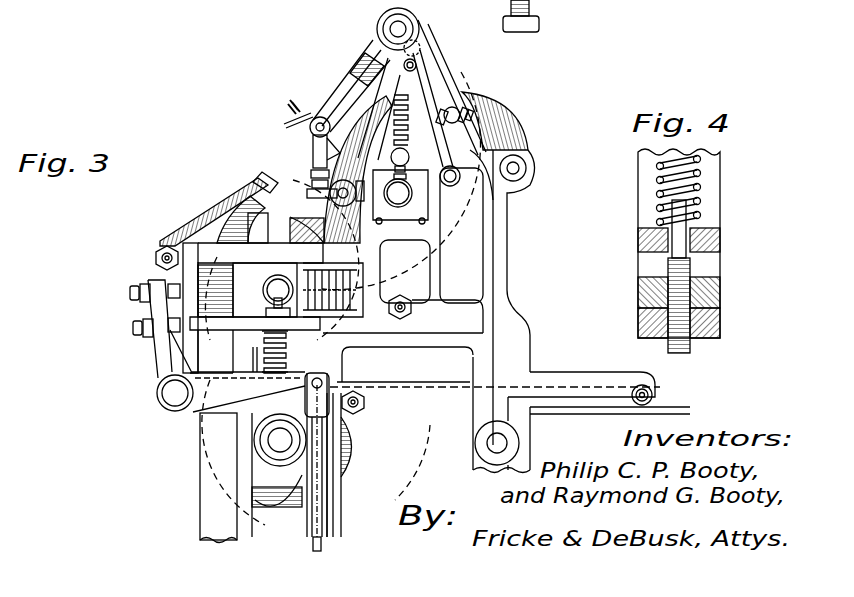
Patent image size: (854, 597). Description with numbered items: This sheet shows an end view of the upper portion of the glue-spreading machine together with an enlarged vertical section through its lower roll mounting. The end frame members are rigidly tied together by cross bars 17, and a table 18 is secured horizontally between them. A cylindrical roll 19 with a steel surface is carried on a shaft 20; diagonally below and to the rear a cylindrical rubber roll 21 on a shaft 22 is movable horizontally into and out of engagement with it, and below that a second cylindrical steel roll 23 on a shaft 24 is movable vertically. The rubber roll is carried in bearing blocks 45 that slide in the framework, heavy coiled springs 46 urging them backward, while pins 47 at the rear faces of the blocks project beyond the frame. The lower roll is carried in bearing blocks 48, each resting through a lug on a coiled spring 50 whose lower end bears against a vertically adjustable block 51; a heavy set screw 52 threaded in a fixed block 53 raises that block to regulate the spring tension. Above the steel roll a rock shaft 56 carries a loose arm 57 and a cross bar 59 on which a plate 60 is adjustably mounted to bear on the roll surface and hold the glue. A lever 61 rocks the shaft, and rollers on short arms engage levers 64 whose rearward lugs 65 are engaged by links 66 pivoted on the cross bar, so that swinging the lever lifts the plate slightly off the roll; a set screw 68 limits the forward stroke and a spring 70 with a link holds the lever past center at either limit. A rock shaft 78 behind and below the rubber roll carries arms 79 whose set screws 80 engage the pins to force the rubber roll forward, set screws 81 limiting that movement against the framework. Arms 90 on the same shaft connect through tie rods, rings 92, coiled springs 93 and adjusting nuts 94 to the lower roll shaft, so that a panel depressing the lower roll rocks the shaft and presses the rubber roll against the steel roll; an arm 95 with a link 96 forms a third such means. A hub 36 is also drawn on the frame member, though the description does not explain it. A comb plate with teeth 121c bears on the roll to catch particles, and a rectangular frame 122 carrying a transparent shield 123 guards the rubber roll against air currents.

In FIG. 3, the cross bars 17 is at (160, 252).
In FIG. 3, the table 18 is at (590, 382).
In FIG. 3, the cylindrical roll 19 is at (376, 116).
In FIG. 3, the shaft 20 is at (410, 198).
In FIG. 3, the cylindrical rubber roll 21 is at (240, 192).
In FIG. 3, the shaft 22 is at (270, 294).
In FIG. 3, the second cylindrical steel roll 23 is at (352, 446).
In FIG. 3, the shaft 24 is at (278, 440).
In FIG. 3, the hub 36 is at (487, 443).
In FIG. 3, the bearing blocks 45 is at (268, 270).
In FIG. 3, the coiled springs 46 is at (357, 290).
In FIG. 3, the pins 47 is at (222, 281).
In FIG. 3, the bearing blocks 48 is at (270, 490).
In FIG. 4, the coiled spring 50 is at (701, 164).
In FIG. 4, the vertically adjustable block 51 is at (720, 240).
In FIG. 4, the set screw 52 is at (690, 270).
In FIG. 4, the fixed block 53 is at (720, 296).
In FIG. 3, the rock shaft 56 is at (390, 30).
In FIG. 3, the arm 57 is at (370, 53).
In FIG. 3, the cross bar 59 is at (284, 120).
In FIG. 3, the plate 60 is at (308, 118).
In FIG. 3, the lever 61 is at (422, 85).
In FIG. 3, the levers 64 is at (396, 98).
In FIG. 3, the lug 65 is at (306, 192).
In FIG. 3, the links 66 is at (313, 155).
In FIG. 3, the set screw 68 is at (463, 104).
In FIG. 3, the spring 70 is at (386, 106).
In FIG. 3, the rock shaft 78 is at (163, 393).
In FIG. 3, the arms 79 is at (160, 362).
In FIG. 3, the set screws 80 is at (130, 290).
In FIG. 3, the set screws 81 is at (133, 327).
In FIG. 3, the arms 90 is at (198, 404).
In FIG. 3, the rings 92 is at (292, 455).
In FIG. 3, the coiled springs 93 is at (247, 352).
In FIG. 3, the nuts 94 is at (332, 336).
In FIG. 3, the arm 95 is at (200, 440).
In FIG. 3, the link 96 is at (322, 548).
In FIG. 3, the teeth 121c is at (514, 138).
In FIG. 3, the rectangular frame 122 is at (226, 210).
In FIG. 3, the shield 123 is at (210, 240).